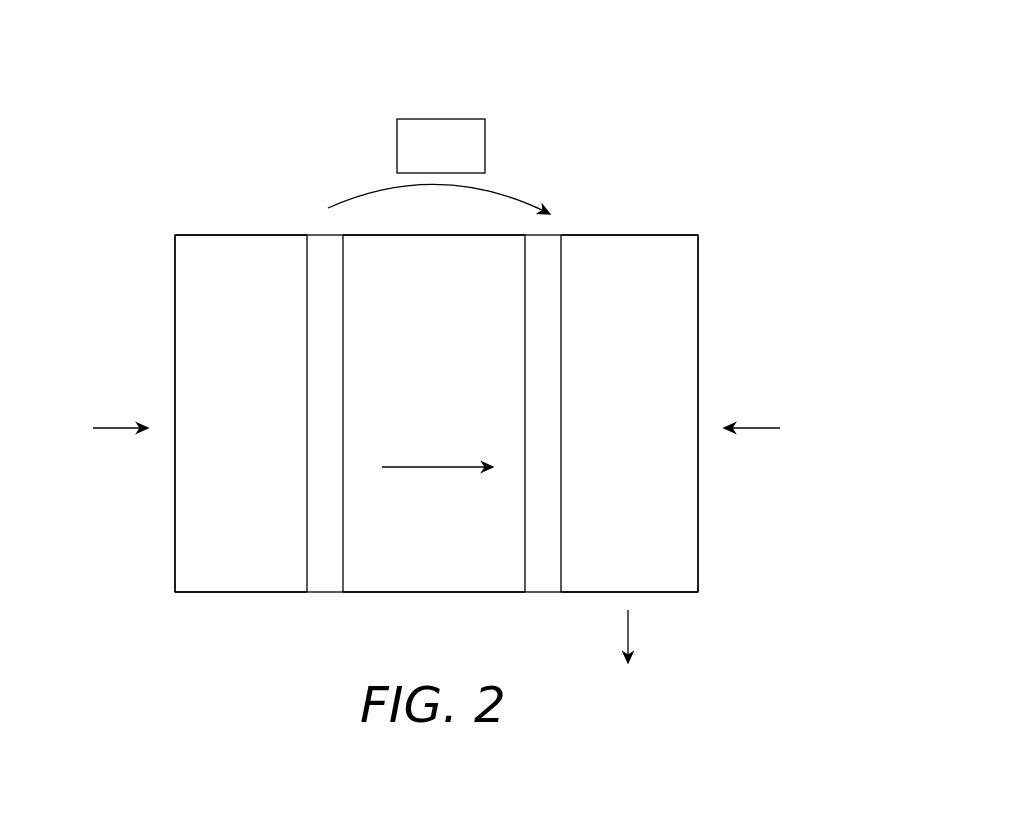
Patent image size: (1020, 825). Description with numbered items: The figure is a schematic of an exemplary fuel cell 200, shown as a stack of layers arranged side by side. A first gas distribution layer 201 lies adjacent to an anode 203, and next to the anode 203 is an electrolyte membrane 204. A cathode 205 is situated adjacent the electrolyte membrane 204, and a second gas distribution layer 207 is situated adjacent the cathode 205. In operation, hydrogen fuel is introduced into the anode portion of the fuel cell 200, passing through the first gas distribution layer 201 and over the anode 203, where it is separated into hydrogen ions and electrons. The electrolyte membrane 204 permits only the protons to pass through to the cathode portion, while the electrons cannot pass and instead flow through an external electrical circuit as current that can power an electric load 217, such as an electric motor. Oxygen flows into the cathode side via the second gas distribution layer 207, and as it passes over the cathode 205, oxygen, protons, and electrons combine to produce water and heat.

The fuel cell 200 is at (714, 129).
The first gas distribution layer 201 is at (268, 573).
The anode 203 is at (325, 592).
The electrolyte membrane 204 is at (460, 573).
The cathode 205 is at (542, 592).
The second gas distribution layer 207 is at (656, 573).
The electric load 217 is at (440, 119).